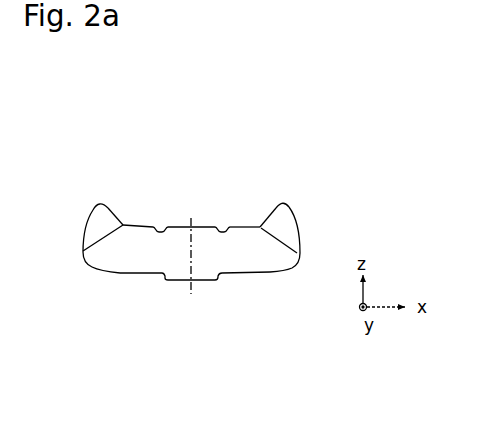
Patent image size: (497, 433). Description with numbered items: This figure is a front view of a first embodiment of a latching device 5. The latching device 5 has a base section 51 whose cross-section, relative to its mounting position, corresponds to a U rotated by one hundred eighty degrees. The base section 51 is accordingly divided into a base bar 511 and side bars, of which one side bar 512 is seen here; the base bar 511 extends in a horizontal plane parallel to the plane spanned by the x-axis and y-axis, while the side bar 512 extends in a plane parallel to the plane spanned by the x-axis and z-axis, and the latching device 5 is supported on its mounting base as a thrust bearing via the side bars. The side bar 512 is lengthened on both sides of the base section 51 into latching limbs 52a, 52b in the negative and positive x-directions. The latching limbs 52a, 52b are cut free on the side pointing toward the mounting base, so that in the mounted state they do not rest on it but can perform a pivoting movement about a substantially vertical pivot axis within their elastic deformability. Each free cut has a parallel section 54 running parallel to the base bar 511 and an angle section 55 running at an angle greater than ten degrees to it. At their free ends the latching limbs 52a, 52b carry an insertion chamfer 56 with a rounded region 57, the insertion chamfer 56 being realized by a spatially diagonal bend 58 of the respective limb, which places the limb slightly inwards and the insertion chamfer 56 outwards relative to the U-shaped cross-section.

The latching device 5 is at (176, 123).
The base section 51 is at (180, 268).
The base bar 511 is at (202, 224).
The side bar 512 is at (210, 281).
The latching limb 52a is at (140, 240).
The latching limb 52b is at (250, 248).
The parallel section 54 is at (144, 273).
The angle section 55 is at (110, 272).
The insertion chamfer 56 is at (106, 213).
The rounded region 57 is at (94, 204).
The spatially diagonal bend 58 is at (108, 233).